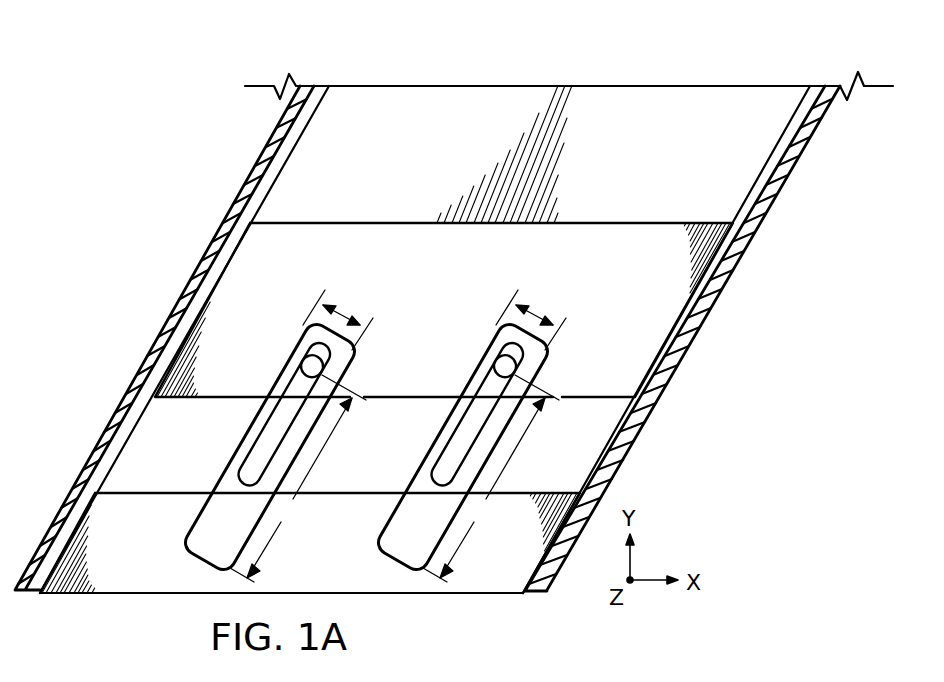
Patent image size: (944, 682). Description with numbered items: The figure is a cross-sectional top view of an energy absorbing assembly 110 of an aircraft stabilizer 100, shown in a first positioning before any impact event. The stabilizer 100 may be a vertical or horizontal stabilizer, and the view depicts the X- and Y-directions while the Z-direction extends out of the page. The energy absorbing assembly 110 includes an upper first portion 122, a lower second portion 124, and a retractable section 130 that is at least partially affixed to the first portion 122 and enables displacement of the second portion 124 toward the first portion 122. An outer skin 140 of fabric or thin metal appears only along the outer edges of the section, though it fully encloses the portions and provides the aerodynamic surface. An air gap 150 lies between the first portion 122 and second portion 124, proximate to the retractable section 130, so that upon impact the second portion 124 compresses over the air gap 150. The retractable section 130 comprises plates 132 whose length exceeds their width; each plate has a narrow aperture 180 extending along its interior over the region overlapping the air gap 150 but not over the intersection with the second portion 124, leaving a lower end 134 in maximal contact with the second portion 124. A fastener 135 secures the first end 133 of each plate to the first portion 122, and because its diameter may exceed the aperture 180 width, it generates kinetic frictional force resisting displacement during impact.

The stabilizer 100 is at (703, 51).
The energy absorbing assembly 110 is at (768, 244).
The first portion 122 is at (345, 237).
The second portion 124 is at (483, 583).
The retractable section 130 is at (339, 433).
The plates 132 is at (435, 433).
The first end 133 is at (279, 412).
The lower end 134 is at (242, 433).
The fastener 135 is at (312, 366).
The outer skin 140 is at (718, 304).
The air gap 150 is at (597, 441).
The aperture 180 is at (478, 414).